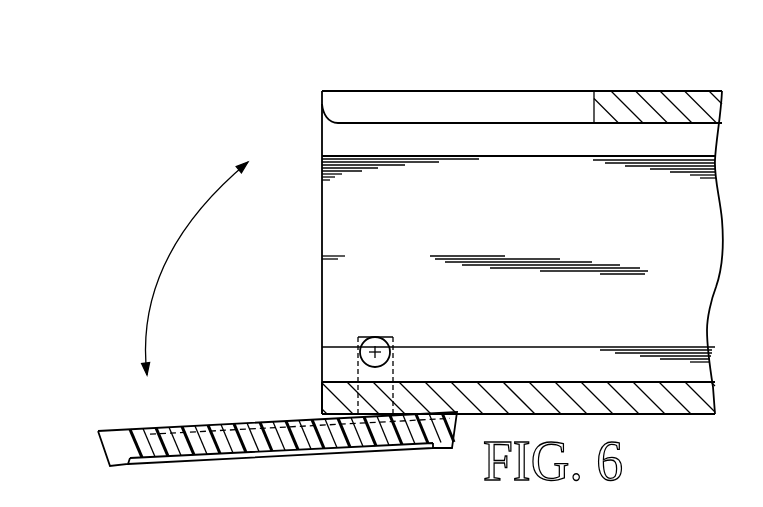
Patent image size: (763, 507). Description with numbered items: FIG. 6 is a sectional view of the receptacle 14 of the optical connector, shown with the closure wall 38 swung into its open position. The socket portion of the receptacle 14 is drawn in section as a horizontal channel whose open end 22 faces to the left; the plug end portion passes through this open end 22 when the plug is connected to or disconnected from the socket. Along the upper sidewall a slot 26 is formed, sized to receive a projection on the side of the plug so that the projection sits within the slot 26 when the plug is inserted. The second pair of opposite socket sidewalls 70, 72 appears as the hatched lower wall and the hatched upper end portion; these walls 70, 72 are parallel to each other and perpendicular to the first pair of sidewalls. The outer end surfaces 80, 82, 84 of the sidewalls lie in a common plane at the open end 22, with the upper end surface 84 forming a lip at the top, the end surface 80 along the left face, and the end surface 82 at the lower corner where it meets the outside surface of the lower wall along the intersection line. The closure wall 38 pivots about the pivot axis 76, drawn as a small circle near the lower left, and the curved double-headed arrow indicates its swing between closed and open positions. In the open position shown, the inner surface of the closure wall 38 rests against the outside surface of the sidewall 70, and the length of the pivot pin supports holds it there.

The receptacle 14 is at (557, 82).
The open end 22 is at (321, 255).
The slot 26 is at (440, 106).
The closure wall 38 is at (160, 427).
The socket sidewall 70 is at (555, 392).
The socket sidewall 72 is at (648, 113).
The pivot axis 76 is at (382, 341).
The outer end surface 80 is at (321, 207).
The outer end surface 82 is at (321, 390).
The outer end surface 84 is at (322, 106).